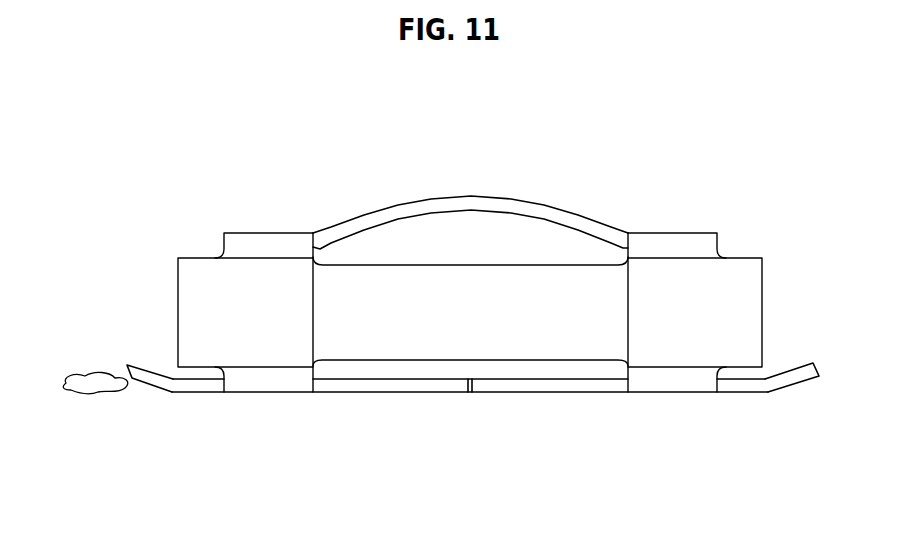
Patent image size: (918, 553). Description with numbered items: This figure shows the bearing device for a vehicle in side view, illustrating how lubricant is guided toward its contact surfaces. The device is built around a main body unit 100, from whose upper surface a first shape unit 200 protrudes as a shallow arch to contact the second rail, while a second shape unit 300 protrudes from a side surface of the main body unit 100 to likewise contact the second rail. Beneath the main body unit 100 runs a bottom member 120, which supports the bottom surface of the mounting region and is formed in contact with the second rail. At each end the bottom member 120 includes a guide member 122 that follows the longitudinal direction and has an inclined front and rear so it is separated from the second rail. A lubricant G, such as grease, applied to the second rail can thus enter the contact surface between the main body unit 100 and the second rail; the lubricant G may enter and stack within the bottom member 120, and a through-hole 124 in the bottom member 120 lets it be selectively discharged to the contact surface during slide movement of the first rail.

The main body unit 100 is at (670, 273).
The first shape unit 200 is at (383, 217).
The second shape unit 300 is at (555, 285).
The bottom member 120 is at (469, 378).
The guide member 122 is at (150, 367).
The through-hole 124 is at (473, 390).
The lubricant G is at (93, 378).